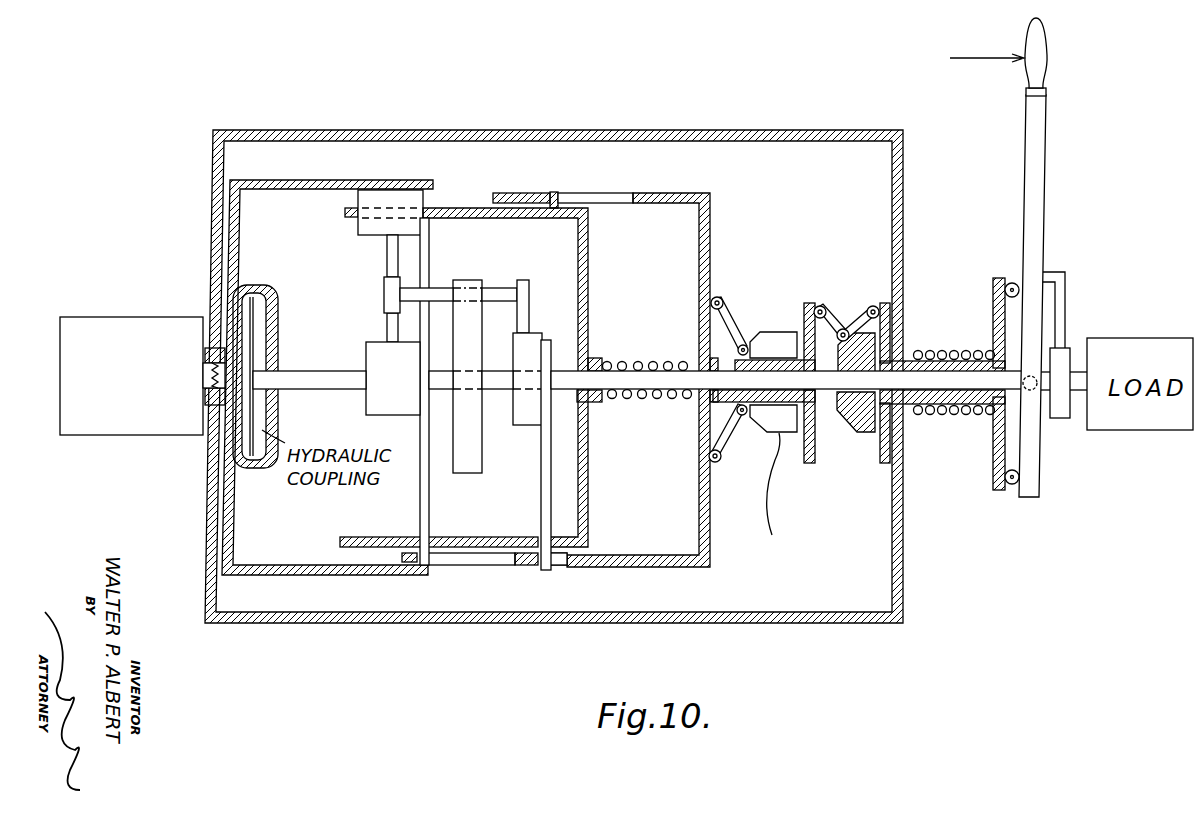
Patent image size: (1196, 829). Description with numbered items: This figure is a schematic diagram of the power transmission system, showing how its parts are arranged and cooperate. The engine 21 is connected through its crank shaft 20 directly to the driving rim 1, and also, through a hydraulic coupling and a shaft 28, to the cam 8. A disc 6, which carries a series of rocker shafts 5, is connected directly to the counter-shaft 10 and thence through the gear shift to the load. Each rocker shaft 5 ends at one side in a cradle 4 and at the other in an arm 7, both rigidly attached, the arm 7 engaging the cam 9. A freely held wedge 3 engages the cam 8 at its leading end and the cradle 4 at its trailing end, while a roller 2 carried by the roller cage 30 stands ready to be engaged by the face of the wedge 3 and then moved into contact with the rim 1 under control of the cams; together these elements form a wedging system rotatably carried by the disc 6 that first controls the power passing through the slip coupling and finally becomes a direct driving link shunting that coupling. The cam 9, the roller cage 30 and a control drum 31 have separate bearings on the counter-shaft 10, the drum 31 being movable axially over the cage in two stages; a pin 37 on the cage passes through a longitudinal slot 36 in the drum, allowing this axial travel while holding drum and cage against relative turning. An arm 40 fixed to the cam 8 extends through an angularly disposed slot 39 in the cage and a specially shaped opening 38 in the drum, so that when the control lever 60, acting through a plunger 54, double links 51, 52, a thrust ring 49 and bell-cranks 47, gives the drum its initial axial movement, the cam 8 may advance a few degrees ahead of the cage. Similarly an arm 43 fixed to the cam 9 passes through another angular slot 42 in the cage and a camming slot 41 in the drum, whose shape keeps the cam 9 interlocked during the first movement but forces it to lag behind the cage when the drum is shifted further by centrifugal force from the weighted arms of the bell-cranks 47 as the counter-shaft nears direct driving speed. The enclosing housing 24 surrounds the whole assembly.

The driving rim 1 is at (311, 180).
The roller 2 is at (383, 192).
The wedge 3 is at (386, 328).
The cradle 4 is at (400, 290).
The rocker shaft 5 is at (505, 288).
The disc 6 is at (475, 473).
The arm 7 is at (532, 310).
The cam 8 is at (389, 415).
The cam 9 is at (522, 425).
The counter-shaft 10 is at (652, 378).
The crank shaft 20 is at (206, 385).
The engine 21 is at (117, 318).
The outer casing 24 is at (579, 130).
The shaft 28 is at (318, 370).
The roller cage 30 is at (460, 208).
The control drum 31 is at (661, 193).
The longitudinal slot 36 is at (617, 204).
The pin 37 is at (553, 193).
The opening 38 is at (462, 560).
The angularly disposed slot 39 is at (405, 536).
The arm 40 is at (418, 500).
The camming slot 41 is at (559, 563).
The angularly disposed slot 42 is at (537, 544).
The arm 43 is at (540, 508).
The bell-cranks 47 is at (730, 318).
The thrust ring 49 is at (806, 465).
The double link 51 is at (822, 307).
The double link 52 is at (850, 306).
The plunger 54 is at (862, 435).
The control lever 60 is at (1038, 137).